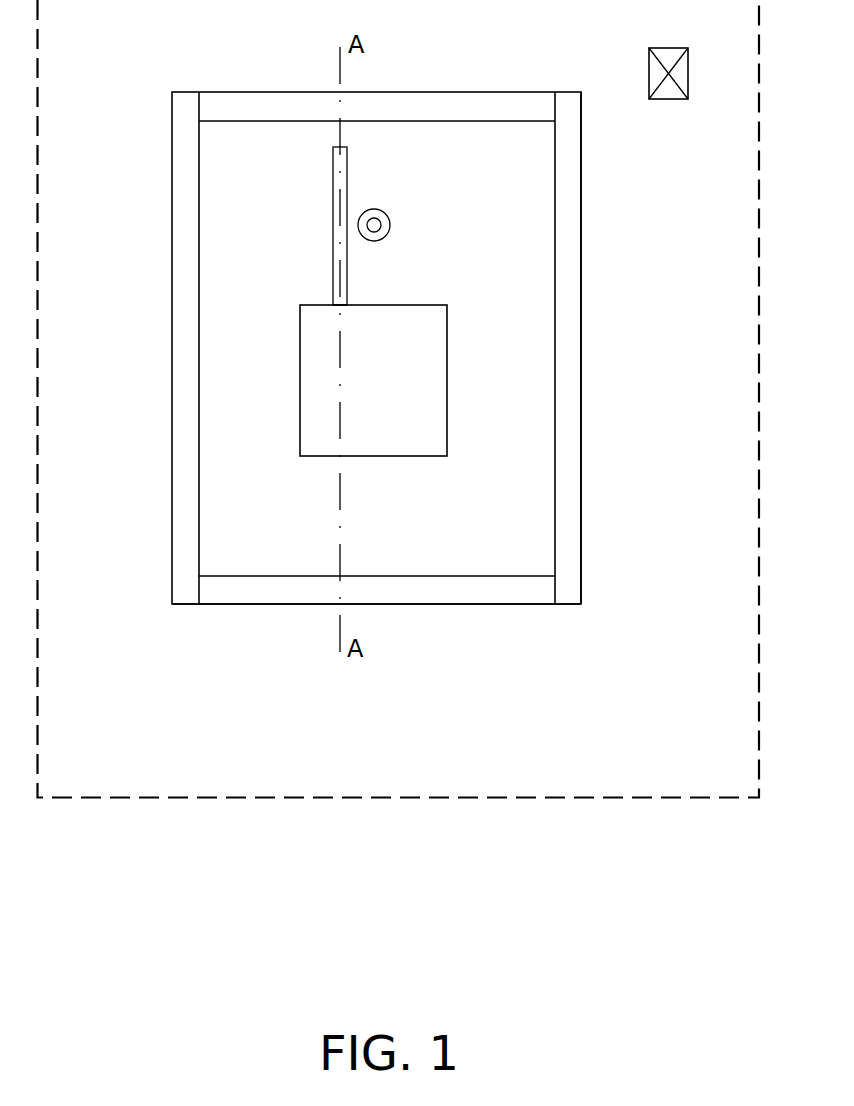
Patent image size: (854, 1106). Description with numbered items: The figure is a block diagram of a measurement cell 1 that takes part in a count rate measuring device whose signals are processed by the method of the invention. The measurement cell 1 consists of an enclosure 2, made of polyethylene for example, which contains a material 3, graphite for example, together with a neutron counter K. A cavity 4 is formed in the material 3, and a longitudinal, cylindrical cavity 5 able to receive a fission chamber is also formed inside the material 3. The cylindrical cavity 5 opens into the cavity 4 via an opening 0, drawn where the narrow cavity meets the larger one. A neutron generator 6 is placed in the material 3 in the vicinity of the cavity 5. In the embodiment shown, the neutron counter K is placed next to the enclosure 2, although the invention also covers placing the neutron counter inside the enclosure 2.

The opening 0 is at (335, 305).
The measurement cell 1 is at (636, 772).
The enclosure 2 is at (505, 590).
The material 3 is at (525, 322).
The cavity 4 is at (427, 392).
The longitudinal cavity 5 is at (340, 172).
The neutron generator 6 is at (385, 230).
The neutron counter K is at (670, 93).